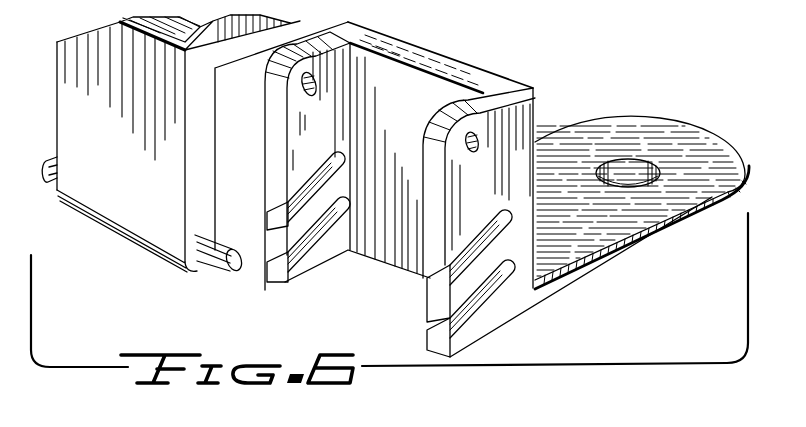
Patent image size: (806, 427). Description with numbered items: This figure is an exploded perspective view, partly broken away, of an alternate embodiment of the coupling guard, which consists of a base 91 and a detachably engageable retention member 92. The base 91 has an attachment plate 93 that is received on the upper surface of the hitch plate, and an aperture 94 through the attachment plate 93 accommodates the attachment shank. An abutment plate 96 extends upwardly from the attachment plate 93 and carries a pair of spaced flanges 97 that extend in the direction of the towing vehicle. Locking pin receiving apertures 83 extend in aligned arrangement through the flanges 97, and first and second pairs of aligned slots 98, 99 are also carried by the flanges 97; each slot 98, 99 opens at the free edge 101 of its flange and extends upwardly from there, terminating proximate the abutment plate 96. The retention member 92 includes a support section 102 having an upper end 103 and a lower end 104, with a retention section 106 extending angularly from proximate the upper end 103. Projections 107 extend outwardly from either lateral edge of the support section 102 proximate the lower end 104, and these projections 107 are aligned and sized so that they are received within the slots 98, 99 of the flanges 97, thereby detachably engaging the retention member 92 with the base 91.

The base 91 is at (642, 185).
The retention member 92 is at (159, 151).
The attachment plate 93 is at (647, 250).
The aperture 94 is at (628, 178).
The abutment plate 96 is at (447, 64).
The flanges 97 is at (312, 267).
The first pair of aligned slots 98 is at (270, 258).
The second pair of aligned slots 99 is at (283, 200).
The free edge 101 is at (273, 147).
The support section 102 is at (60, 122).
The upper end 103 is at (119, 24).
The lower end 104 is at (74, 207).
The retention section 106 is at (177, 28).
The projections 107 is at (48, 157).
The locking pin receiving apertures 83 is at (305, 90).